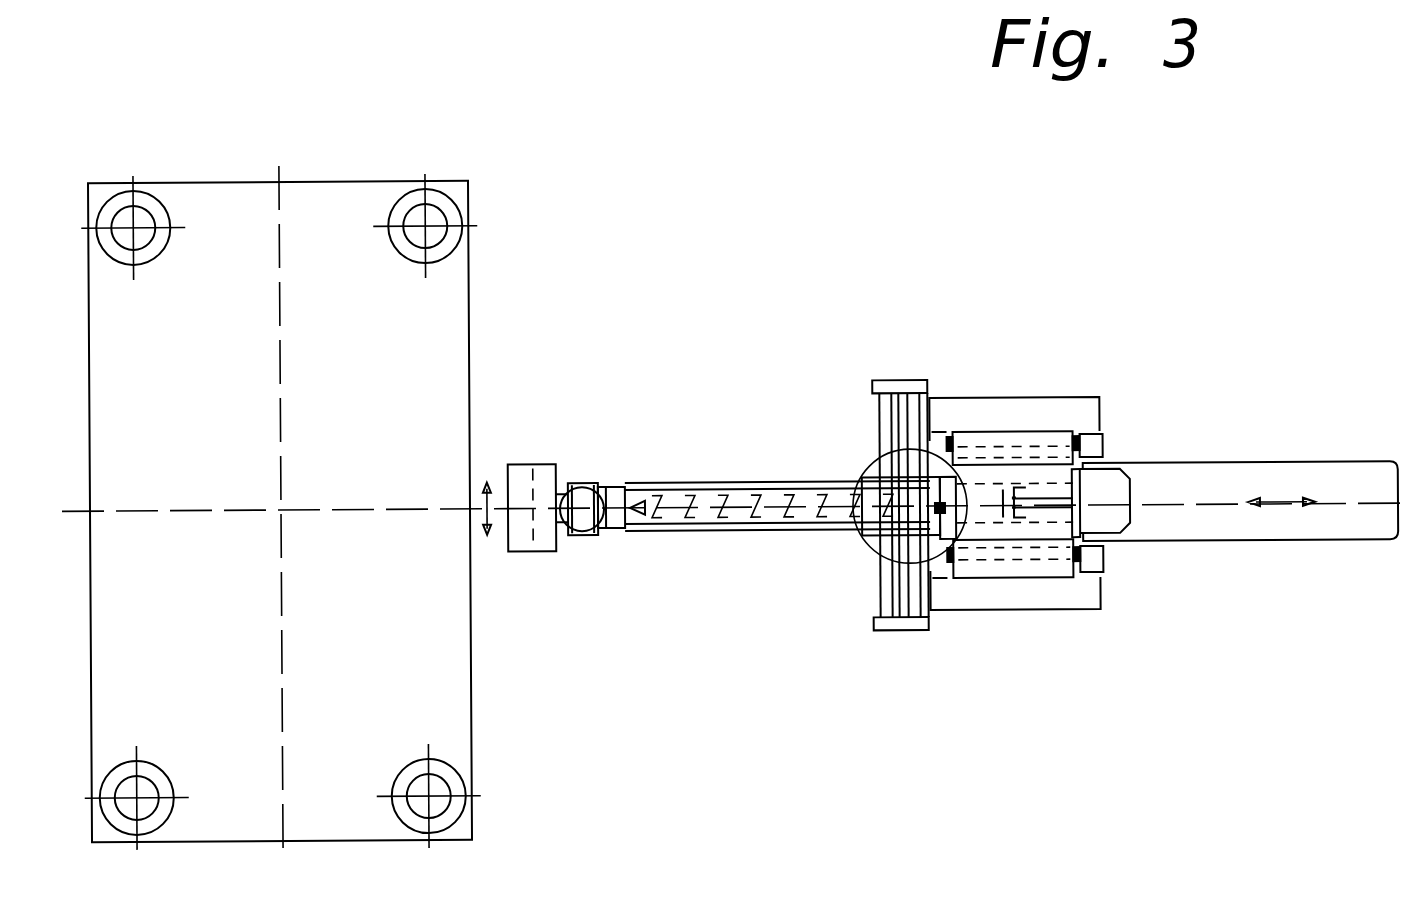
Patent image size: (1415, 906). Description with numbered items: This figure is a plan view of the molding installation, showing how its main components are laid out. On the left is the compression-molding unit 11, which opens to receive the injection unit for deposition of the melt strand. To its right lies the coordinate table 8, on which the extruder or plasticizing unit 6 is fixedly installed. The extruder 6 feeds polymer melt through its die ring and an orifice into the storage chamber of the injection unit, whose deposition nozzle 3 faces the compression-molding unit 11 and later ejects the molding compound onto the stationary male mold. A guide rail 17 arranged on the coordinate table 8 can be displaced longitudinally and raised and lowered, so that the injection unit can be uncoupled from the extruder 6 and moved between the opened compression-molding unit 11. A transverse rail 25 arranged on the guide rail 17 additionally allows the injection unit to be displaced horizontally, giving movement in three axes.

The compression-molding unit 11 is at (490, 258).
The deposition nozzle 3 is at (547, 479).
The extruder or plasticizing unit 6 is at (738, 441).
The transverse rail 25 is at (908, 579).
The guide rail 17 is at (1069, 420).
The coordinate table 8 is at (1205, 489).